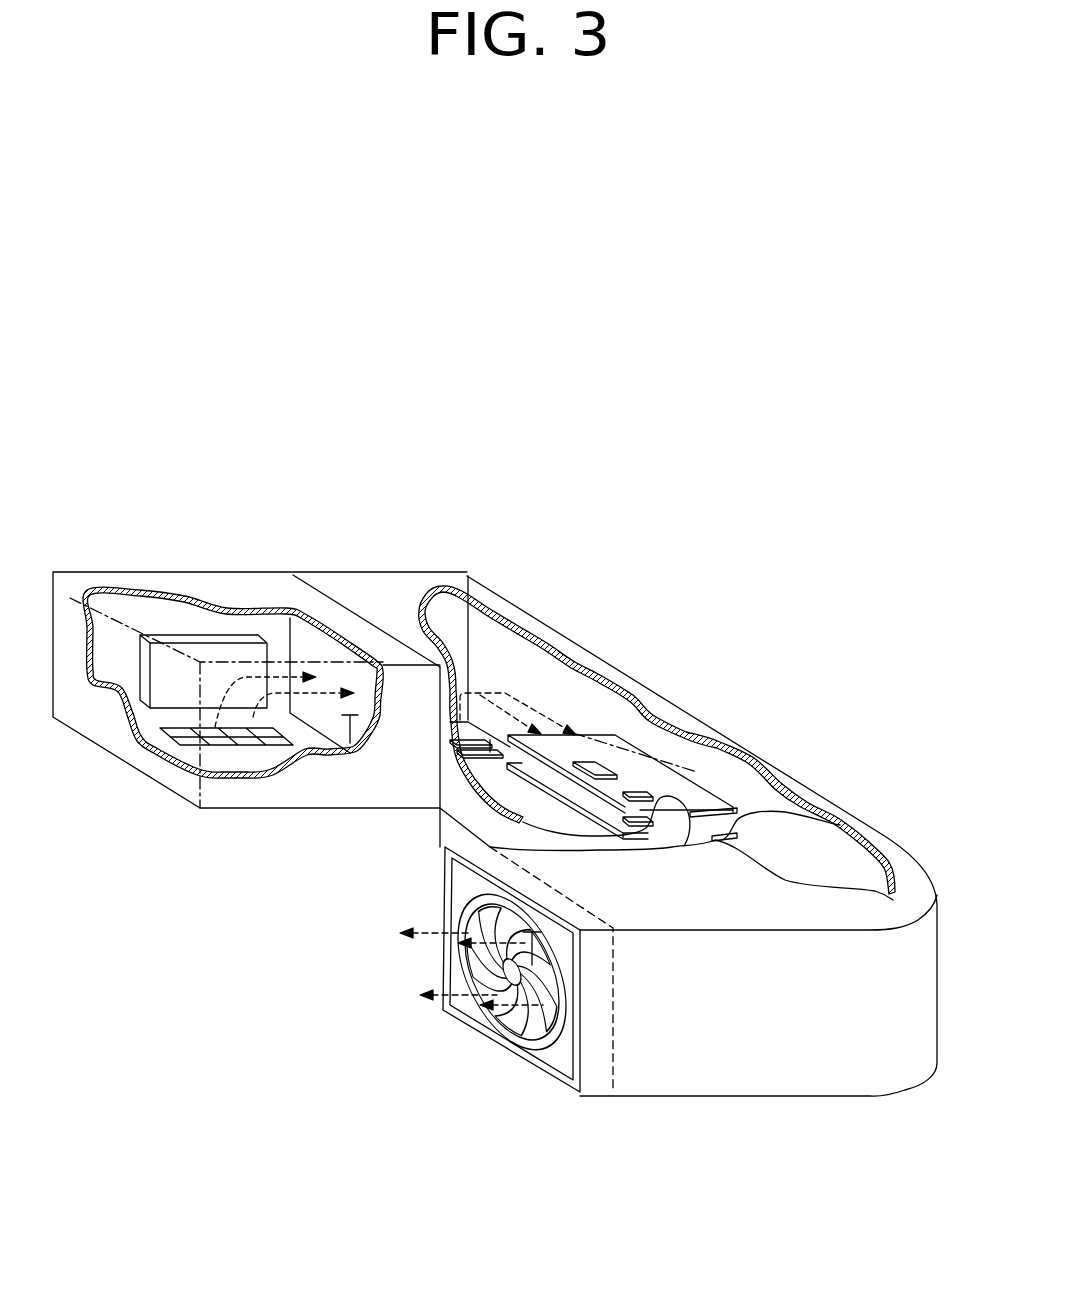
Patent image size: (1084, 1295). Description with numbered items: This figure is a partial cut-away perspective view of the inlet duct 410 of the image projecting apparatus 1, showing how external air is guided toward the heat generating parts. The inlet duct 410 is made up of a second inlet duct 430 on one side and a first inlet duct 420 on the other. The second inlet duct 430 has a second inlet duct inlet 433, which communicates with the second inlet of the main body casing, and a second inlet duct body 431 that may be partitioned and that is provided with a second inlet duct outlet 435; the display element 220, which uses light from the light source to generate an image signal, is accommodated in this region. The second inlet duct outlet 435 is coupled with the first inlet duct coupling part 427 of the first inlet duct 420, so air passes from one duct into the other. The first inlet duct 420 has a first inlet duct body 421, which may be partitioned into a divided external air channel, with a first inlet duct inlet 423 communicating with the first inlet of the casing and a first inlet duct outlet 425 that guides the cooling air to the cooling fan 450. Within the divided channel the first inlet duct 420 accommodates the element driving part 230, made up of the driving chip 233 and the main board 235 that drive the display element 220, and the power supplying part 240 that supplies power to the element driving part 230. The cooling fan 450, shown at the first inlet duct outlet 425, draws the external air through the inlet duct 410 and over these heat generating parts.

The image projecting apparatus 1 is at (815, 500).
The inlet duct 410 is at (302, 395).
The second inlet duct 430 is at (250, 568).
The first inlet duct 420 is at (463, 572).
The first inlet duct coupling part 427 is at (355, 616).
The second inlet duct body 431 is at (103, 746).
The display element 220 is at (153, 642).
The second inlet duct inlet 433 is at (253, 748).
The second inlet duct outlet 435 is at (350, 746).
The first inlet duct body 421 is at (597, 655).
The first inlet duct inlet 423 is at (440, 809).
The first inlet duct outlet 425 is at (490, 1040).
The cooling fan 450 is at (557, 1063).
The element driving part 230 is at (693, 776).
The driving chip 233 is at (600, 756).
The main board 235 is at (722, 800).
The power supplying part 240 is at (845, 818).